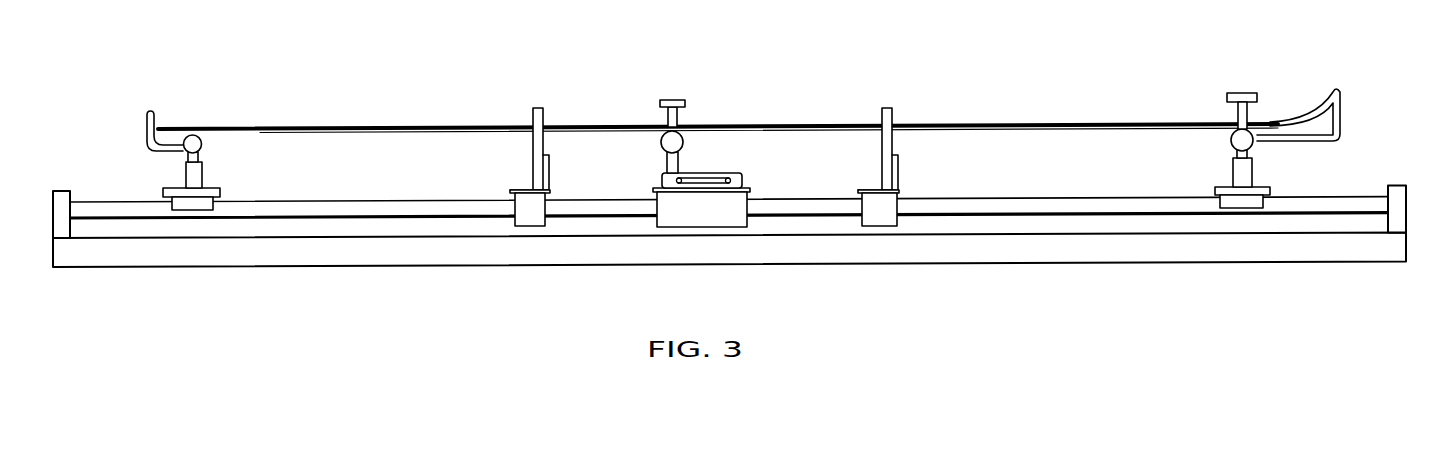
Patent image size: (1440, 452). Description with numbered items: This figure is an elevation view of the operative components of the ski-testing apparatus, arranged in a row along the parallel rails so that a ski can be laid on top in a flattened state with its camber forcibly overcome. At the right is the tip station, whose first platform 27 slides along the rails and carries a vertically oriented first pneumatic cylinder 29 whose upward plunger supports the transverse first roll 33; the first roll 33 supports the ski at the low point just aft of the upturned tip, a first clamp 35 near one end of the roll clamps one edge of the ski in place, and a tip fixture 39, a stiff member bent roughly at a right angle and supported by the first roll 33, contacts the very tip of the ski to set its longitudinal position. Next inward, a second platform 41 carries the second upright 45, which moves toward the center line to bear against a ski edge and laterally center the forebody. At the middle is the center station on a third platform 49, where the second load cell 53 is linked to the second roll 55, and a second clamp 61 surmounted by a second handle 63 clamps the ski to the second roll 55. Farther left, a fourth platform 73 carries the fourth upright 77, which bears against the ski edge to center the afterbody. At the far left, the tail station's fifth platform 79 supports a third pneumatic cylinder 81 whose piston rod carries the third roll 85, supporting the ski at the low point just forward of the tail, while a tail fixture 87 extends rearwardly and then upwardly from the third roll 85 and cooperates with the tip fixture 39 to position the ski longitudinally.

The first platform 27 is at (1270, 190).
The first pneumatic cylinder 29 is at (1253, 168).
The first roll 33 is at (1231, 145).
The first clamp 35 is at (1238, 116).
The tip fixture 39 is at (1341, 110).
The second platform 41 is at (862, 190).
The second upright 45 is at (893, 113).
The third platform 49 is at (657, 192).
The second load cell 53 is at (745, 181).
The second roll 55 is at (683, 142).
The second clamp 61 is at (678, 116).
The second handle 63 is at (668, 104).
The fourth platform 73 is at (513, 192).
The fourth upright 77 is at (543, 108).
The fifth platform 79 is at (222, 193).
The third pneumatic cylinder 81 is at (186, 177).
The third roll 85 is at (204, 147).
The tail fixture 87 is at (147, 130).